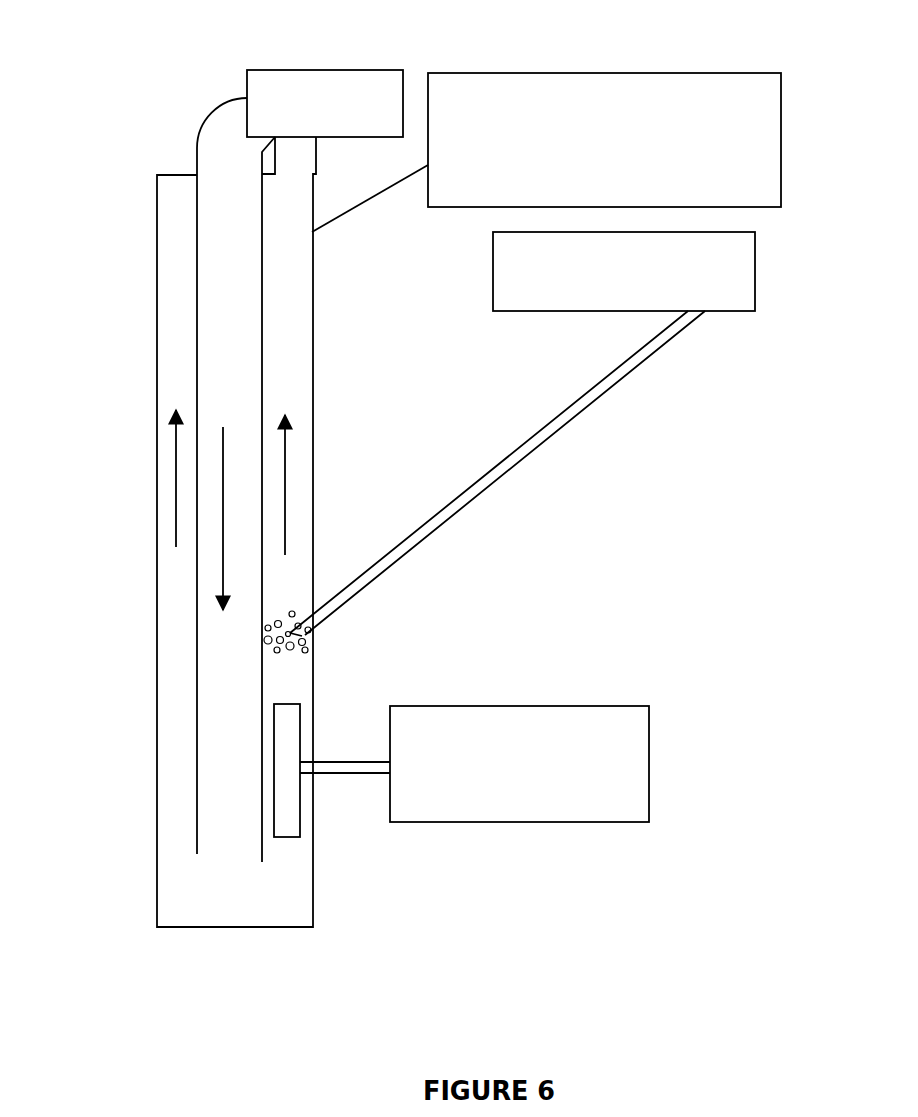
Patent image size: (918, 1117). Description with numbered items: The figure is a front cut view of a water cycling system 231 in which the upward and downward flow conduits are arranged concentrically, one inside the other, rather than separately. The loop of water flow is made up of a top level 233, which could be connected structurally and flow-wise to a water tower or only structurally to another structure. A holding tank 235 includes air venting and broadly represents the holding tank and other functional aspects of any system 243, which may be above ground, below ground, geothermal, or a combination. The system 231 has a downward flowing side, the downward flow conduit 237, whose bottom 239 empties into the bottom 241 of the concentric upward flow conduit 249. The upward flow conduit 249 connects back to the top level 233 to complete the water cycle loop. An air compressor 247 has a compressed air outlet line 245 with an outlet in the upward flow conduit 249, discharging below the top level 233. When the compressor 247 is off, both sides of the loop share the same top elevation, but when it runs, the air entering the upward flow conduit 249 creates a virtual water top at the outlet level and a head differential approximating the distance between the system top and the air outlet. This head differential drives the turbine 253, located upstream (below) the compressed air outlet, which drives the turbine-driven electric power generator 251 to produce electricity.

The water cycling system 231 is at (140, 88).
The top level 233 is at (213, 135).
The holding tank 235 is at (313, 70).
The downward flow conduit 237 is at (223, 358).
The bottom 239 is at (226, 854).
The bottom 241 is at (219, 902).
The any system 243 is at (500, 72).
The compressed air outlet line 245 is at (500, 477).
The air compressor 247 is at (508, 311).
The upward flow conduit 249 is at (280, 317).
The turbine-driven electric power generator 251 is at (590, 706).
The turbine 253 is at (287, 737).